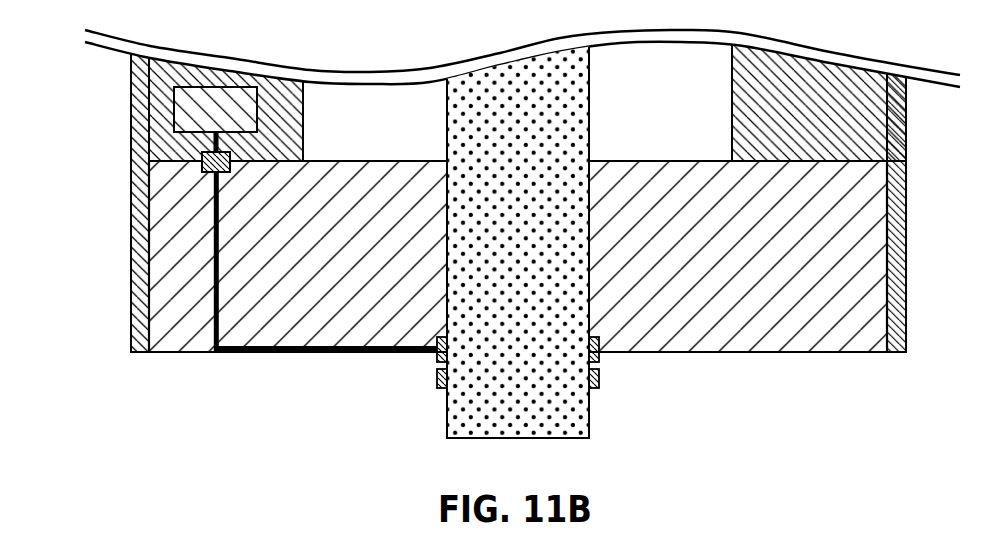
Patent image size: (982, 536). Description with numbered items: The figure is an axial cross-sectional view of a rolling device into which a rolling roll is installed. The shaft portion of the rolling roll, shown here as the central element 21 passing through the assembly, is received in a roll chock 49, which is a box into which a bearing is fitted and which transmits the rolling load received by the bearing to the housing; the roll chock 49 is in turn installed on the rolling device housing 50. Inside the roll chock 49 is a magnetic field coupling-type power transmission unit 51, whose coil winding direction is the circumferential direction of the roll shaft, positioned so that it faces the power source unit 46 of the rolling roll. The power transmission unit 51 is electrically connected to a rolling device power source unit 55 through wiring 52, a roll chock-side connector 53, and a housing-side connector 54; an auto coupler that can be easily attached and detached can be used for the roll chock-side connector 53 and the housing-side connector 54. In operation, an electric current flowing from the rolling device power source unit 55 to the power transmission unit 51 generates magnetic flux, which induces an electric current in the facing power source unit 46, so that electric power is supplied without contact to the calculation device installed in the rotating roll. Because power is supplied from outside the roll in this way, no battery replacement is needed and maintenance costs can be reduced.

The piezoelectric element 21 is at (573, 410).
The power source unit 46 is at (599, 377).
The roll chock 49 is at (738, 353).
The rolling device housing 50 is at (732, 93).
The power transmission unit 51 is at (438, 360).
The wiring 52 is at (308, 353).
The roll chock-side connector 53 is at (200, 170).
The housing-side connector 54 is at (202, 153).
The rolling device power source unit 55 is at (173, 110).